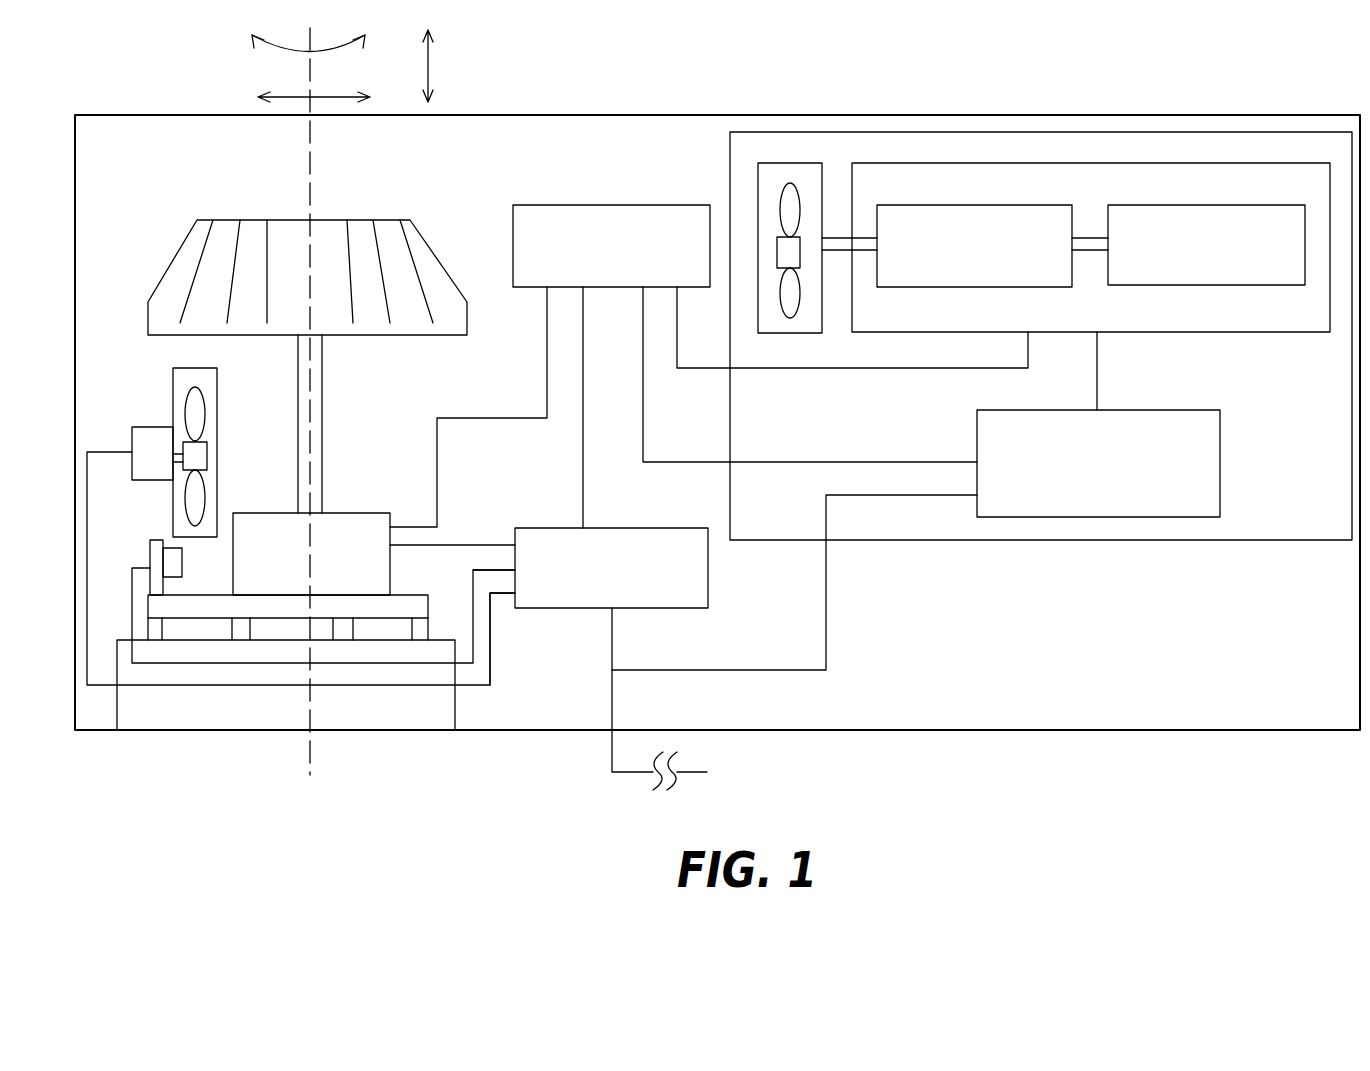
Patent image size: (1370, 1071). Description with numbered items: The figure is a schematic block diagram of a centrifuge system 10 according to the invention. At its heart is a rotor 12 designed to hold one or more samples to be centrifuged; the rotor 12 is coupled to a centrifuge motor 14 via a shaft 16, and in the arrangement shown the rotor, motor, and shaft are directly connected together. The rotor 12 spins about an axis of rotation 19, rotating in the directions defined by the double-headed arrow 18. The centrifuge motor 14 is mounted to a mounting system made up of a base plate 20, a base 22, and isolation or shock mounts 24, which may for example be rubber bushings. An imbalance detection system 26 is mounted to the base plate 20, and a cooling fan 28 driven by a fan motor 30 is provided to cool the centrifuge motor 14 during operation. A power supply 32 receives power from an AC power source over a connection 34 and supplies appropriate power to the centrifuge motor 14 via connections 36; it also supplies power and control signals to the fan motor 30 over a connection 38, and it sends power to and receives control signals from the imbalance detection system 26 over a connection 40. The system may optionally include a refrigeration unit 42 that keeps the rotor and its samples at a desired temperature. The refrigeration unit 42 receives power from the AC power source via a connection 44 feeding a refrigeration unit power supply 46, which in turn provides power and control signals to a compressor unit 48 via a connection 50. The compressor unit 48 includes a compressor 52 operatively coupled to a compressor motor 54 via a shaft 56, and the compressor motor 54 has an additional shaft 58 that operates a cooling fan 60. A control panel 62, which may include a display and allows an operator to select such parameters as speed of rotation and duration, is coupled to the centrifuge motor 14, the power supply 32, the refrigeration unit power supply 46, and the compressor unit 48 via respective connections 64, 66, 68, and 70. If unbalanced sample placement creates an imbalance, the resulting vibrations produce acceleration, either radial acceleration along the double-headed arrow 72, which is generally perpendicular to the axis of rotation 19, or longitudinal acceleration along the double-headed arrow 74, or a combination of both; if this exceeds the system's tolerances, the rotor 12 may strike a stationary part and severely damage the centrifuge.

The centrifuge system 10 is at (883, 113).
The rotor 12 is at (410, 220).
The centrifuge motor 14 is at (337, 512).
The shaft 16 is at (322, 445).
The double-headed arrow 18 is at (265, 50).
The axis of rotation 19 is at (310, 175).
The base plate 20 is at (405, 595).
The base 22 is at (455, 708).
The shock mounts 24 is at (243, 632).
The imbalance detection system 26 is at (155, 540).
The cooling fan 28 is at (217, 373).
The fan motor 30 is at (152, 427).
The power supply 32 is at (708, 598).
The connection 34 is at (612, 652).
The connections 36 is at (430, 543).
The connection 38 is at (490, 655).
The connection 40 is at (492, 570).
The refrigeration unit 42 is at (1214, 555).
The connection 44 is at (827, 640).
The refrigeration unit power supply 46 is at (1205, 407).
The compressor unit 48 is at (1224, 345).
The connection 50 is at (1090, 372).
The compressor 52 is at (1180, 288).
The compressor motor 54 is at (997, 288).
The shaft 56 is at (1083, 237).
The additional shaft 58 is at (855, 235).
The cooling fan 60 is at (810, 335).
The control panel 62 is at (567, 205).
The connection 64 is at (510, 417).
The connection 66 is at (580, 450).
The connection 68 is at (712, 468).
The connection 70 is at (720, 372).
The double-headed arrow 72 is at (258, 97).
The double-headed arrow 74 is at (432, 58).